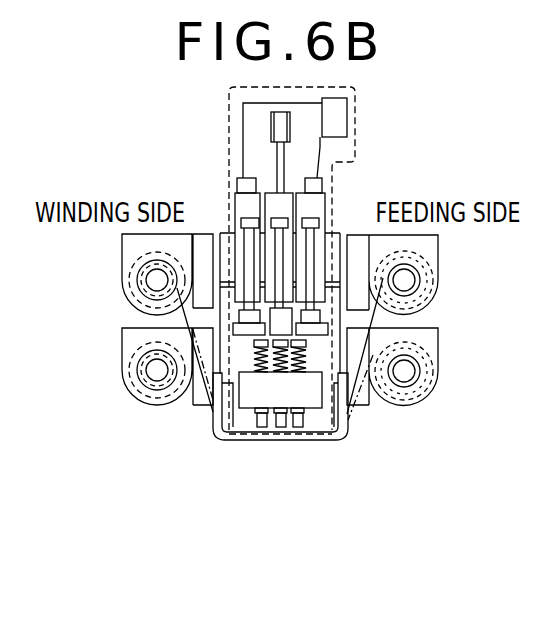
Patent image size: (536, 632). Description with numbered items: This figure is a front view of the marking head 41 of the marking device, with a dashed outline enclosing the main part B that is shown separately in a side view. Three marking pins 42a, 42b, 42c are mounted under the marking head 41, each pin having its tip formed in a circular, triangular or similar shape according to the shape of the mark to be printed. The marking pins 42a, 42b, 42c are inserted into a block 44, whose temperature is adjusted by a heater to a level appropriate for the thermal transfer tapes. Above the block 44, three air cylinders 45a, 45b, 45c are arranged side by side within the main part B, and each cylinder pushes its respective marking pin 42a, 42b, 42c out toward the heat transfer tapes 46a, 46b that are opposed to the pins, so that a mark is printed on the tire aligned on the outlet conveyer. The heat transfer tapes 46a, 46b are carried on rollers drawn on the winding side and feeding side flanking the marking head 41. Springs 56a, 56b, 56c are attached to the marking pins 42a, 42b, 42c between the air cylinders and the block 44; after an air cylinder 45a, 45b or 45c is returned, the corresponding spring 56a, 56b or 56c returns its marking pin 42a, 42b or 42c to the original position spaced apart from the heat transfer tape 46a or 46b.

The marking head 41 is at (388, 149).
The main part B is at (357, 98).
The air cylinder 45a is at (233, 191).
The air cylinder 45b is at (268, 192).
The air cylinder 45c is at (327, 198).
The spring 56a is at (247, 368).
The spring 56b is at (297, 372).
The spring 56c is at (303, 358).
The block 44 is at (323, 406).
The marking pin 42a is at (253, 427).
The marking pin 42b is at (280, 430).
The marking pin 42c is at (300, 428).
The heat transfer tape 46a is at (207, 390).
The heat transfer tape 46b is at (156, 405).